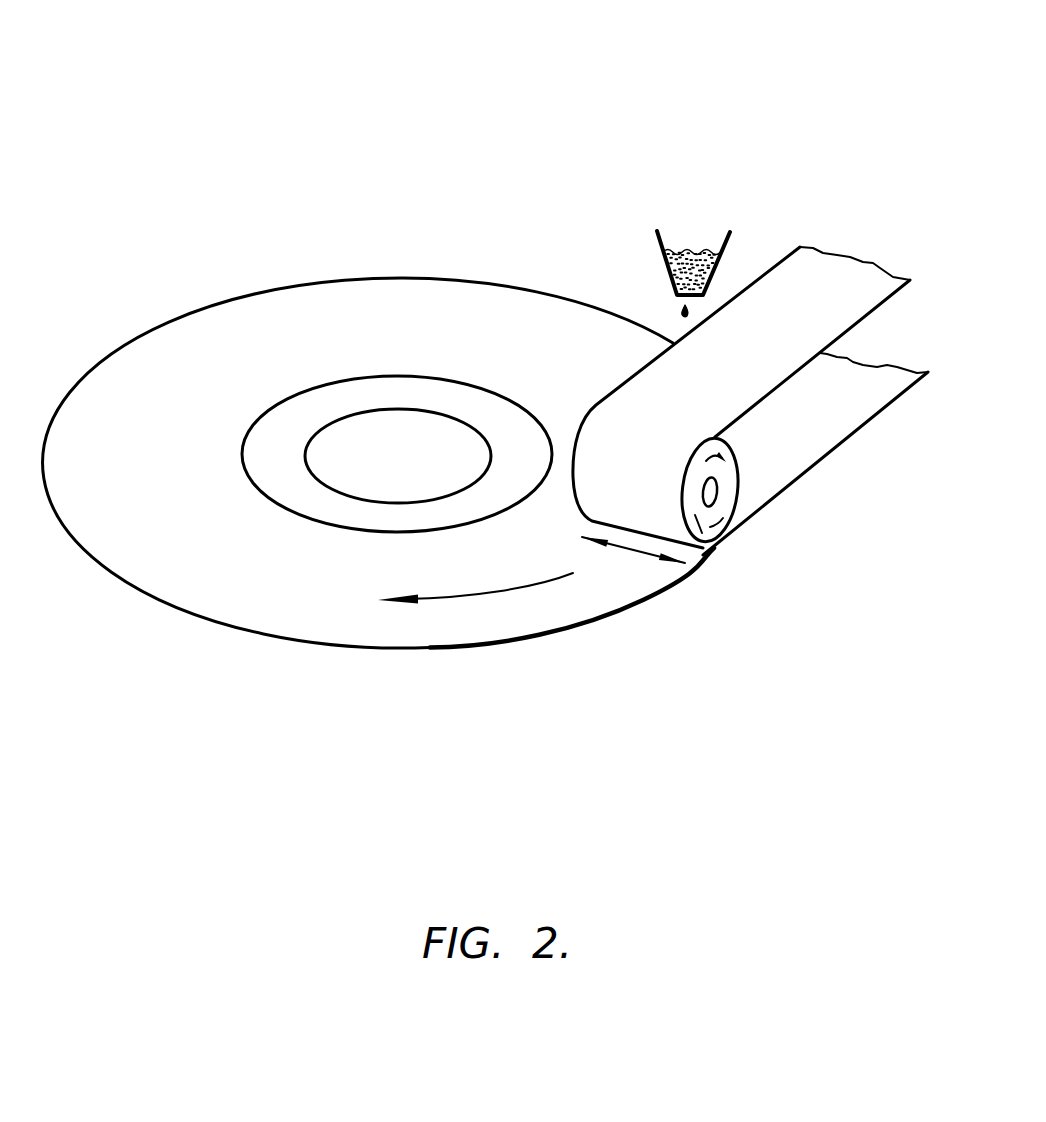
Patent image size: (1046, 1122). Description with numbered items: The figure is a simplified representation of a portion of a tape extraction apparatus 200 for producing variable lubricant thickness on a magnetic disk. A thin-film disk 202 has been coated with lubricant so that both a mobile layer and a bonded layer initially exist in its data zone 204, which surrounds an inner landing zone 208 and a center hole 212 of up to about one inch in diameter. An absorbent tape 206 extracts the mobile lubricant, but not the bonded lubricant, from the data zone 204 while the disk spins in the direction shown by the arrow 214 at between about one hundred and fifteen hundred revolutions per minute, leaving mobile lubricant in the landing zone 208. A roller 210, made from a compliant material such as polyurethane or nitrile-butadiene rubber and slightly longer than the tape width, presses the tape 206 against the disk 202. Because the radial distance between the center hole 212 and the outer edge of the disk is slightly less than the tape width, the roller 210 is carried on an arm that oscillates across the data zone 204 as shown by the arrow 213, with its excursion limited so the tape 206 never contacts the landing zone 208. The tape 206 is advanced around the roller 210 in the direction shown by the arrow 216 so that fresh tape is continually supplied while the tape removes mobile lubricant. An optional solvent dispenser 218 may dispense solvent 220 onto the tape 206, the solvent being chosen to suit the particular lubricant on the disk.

The tape extraction apparatus 200 is at (578, 72).
The thin-film disk 202 is at (138, 330).
The data zone 204 is at (358, 320).
The absorbent tape 206 is at (790, 296).
The landing zone 208 is at (435, 400).
The roller 210 is at (712, 556).
The center hole 212 is at (327, 460).
The arrow 213 is at (638, 550).
The arrow 214 is at (485, 595).
The arrow 216 is at (727, 505).
The solvent dispenser 218 is at (660, 250).
The solvent 220 is at (693, 250).